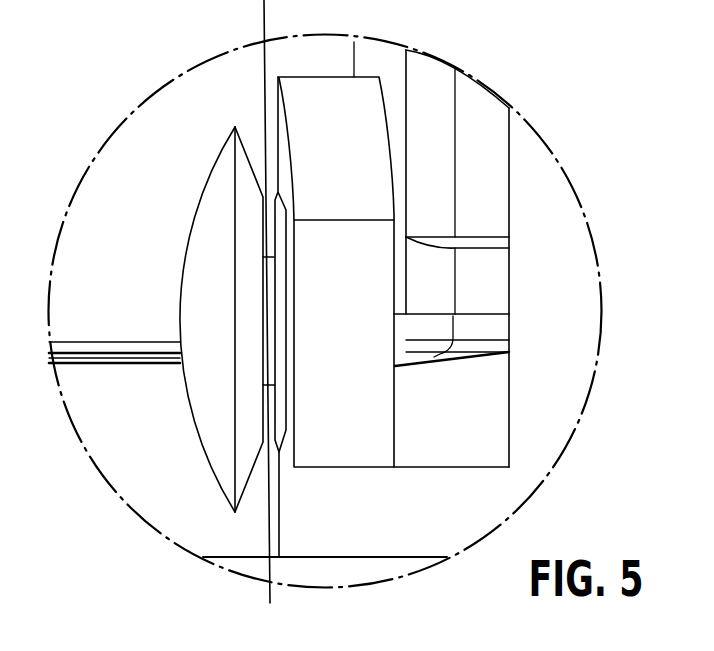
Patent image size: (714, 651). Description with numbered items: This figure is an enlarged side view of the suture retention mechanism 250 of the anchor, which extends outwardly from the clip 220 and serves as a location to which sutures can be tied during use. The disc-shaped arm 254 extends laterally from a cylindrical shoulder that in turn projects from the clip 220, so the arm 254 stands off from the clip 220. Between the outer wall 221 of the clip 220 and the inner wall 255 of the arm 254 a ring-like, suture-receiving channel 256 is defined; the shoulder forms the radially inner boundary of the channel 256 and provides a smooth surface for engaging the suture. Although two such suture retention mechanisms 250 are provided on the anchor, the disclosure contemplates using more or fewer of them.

The clip 220 is at (360, 258).
The outer wall 221 is at (273, 363).
The suture retention mechanism 250 is at (218, 141).
The disc-shaped arm 254 is at (213, 240).
The inner wall 255 is at (263, 365).
The suture-receiving channel 256 is at (273, 317).